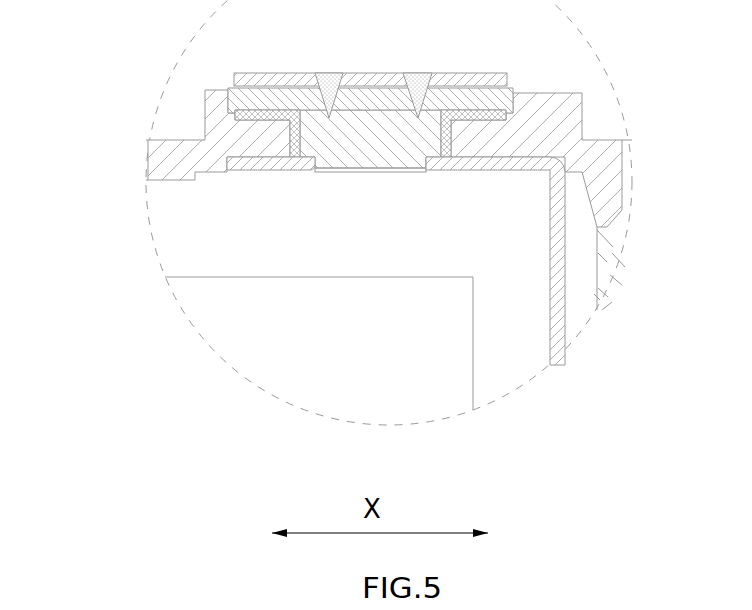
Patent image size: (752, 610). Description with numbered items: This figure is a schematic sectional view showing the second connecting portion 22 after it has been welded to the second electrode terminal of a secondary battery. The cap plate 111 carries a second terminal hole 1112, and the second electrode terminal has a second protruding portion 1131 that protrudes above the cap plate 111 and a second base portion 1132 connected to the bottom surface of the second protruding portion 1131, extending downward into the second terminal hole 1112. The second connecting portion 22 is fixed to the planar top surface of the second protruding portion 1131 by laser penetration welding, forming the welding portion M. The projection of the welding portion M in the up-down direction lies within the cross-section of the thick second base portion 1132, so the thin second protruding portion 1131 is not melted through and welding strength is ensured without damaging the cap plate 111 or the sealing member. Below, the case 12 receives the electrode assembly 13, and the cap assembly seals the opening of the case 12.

The cap plate 111 is at (173, 142).
The second protruding portion 1131 is at (237, 88).
The second base portion 1132 is at (373, 157).
The second terminal hole 1112 is at (283, 137).
The second connecting portion 22 is at (470, 77).
The welding portion M is at (327, 73).
The electrode assembly 13 is at (438, 350).
The case 12 is at (612, 253).